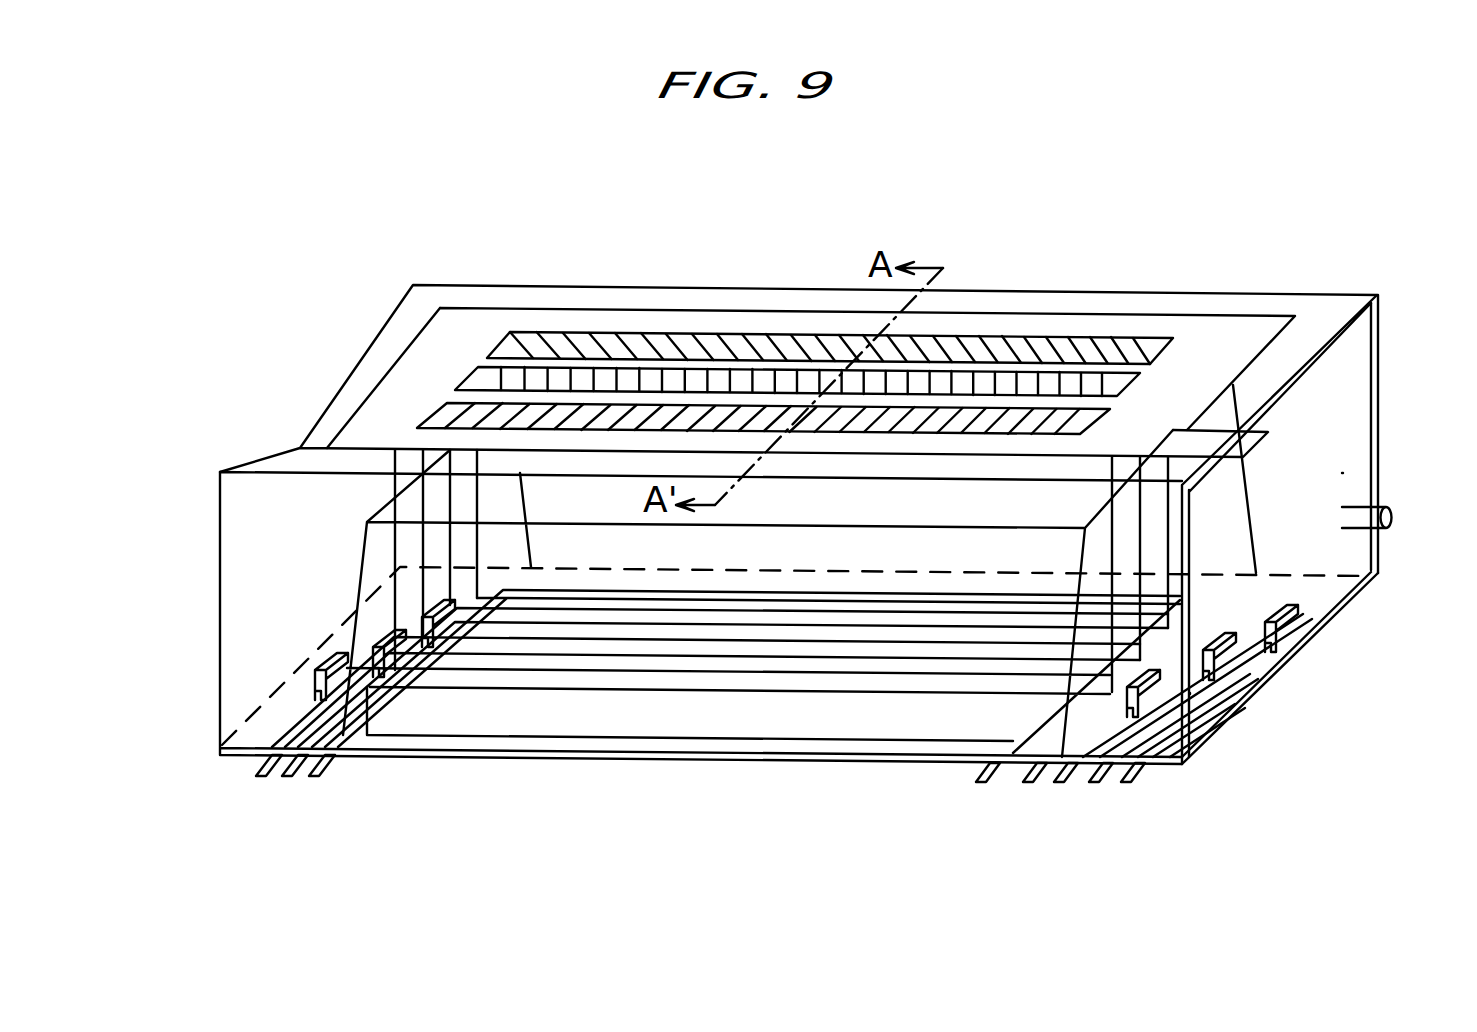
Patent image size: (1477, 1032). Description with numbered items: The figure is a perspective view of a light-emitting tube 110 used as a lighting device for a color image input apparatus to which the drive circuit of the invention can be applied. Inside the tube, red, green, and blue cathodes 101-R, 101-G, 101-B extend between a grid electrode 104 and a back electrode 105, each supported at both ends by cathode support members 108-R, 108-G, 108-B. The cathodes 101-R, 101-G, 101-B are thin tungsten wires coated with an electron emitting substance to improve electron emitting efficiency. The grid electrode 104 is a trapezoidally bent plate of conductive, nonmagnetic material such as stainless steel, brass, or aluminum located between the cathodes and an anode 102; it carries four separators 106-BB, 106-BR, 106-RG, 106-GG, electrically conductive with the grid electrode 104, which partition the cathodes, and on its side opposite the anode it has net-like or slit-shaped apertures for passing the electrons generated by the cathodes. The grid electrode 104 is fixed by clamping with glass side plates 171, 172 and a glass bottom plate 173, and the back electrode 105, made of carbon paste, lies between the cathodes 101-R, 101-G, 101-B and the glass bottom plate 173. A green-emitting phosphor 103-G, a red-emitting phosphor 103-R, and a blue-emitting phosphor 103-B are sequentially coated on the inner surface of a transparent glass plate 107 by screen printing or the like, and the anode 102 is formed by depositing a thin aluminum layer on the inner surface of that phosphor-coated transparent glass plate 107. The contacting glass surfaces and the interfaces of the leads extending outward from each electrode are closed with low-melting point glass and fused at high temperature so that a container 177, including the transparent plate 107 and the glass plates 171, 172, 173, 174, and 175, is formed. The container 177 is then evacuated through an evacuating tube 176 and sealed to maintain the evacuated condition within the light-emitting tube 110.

The blue cathode 101-B is at (485, 670).
The green cathode 101-G is at (687, 613).
The red cathode 101-R is at (583, 640).
The anode 102 is at (1228, 335).
The blue-emitting phosphor 103-B is at (1095, 412).
The green-emitting phosphor 103-G is at (1040, 345).
The red-emitting phosphor 103-R is at (1080, 385).
The grid electrode 104 is at (1248, 488).
The back electrode 105 is at (850, 720).
The separator 106-BB is at (395, 570).
The separator 106-BR is at (423, 520).
The separator 106-GG is at (477, 490).
The separator 106-RG is at (450, 493).
The transparent glass plate 107 is at (1338, 320).
The cathode support member 108-B is at (263, 777).
The cathode support member 108-G is at (323, 777).
The cathode support member 108-R is at (298, 777).
The light-emitting tube 110 is at (1255, 932).
The glass side plate 171 is at (1380, 433).
The glass side plate 172 is at (1190, 693).
The glass bottom plate 173 is at (1333, 620).
The glass plate 174 is at (1355, 358).
The glass plate 175 is at (236, 549).
The evacuating tube 176 is at (1382, 508).
The container 177 is at (1342, 473).